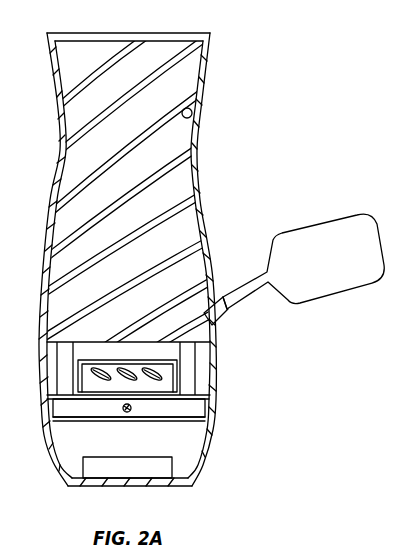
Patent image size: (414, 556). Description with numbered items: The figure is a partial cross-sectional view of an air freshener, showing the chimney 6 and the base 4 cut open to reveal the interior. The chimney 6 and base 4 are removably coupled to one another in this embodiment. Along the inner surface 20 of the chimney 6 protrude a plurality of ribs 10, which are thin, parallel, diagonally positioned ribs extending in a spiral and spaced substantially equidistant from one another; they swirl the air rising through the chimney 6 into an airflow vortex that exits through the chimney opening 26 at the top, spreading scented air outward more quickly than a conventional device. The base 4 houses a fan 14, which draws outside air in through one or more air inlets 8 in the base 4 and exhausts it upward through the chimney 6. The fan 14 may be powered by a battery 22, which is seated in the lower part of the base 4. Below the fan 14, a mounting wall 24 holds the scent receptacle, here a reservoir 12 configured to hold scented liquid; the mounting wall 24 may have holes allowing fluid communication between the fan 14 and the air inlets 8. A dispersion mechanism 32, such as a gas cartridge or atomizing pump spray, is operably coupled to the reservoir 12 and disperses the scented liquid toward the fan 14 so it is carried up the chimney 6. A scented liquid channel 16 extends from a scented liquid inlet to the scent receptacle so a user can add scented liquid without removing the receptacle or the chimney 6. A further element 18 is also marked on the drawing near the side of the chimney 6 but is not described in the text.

The base 4 is at (210, 427).
The chimney 6 is at (202, 83).
The air inlets 8 is at (203, 455).
The plurality of ribs 10 is at (173, 55).
The reservoir 12 is at (60, 407).
The fan 14 is at (155, 375).
The scented liquid channel 16 is at (218, 348).
The connector 18 is at (220, 320).
The inner surface 20 is at (197, 112).
The battery 22 is at (130, 468).
The mounting wall 24 is at (78, 422).
The chimney opening 26 is at (105, 32).
The dispersion mechanism 32 is at (127, 412).